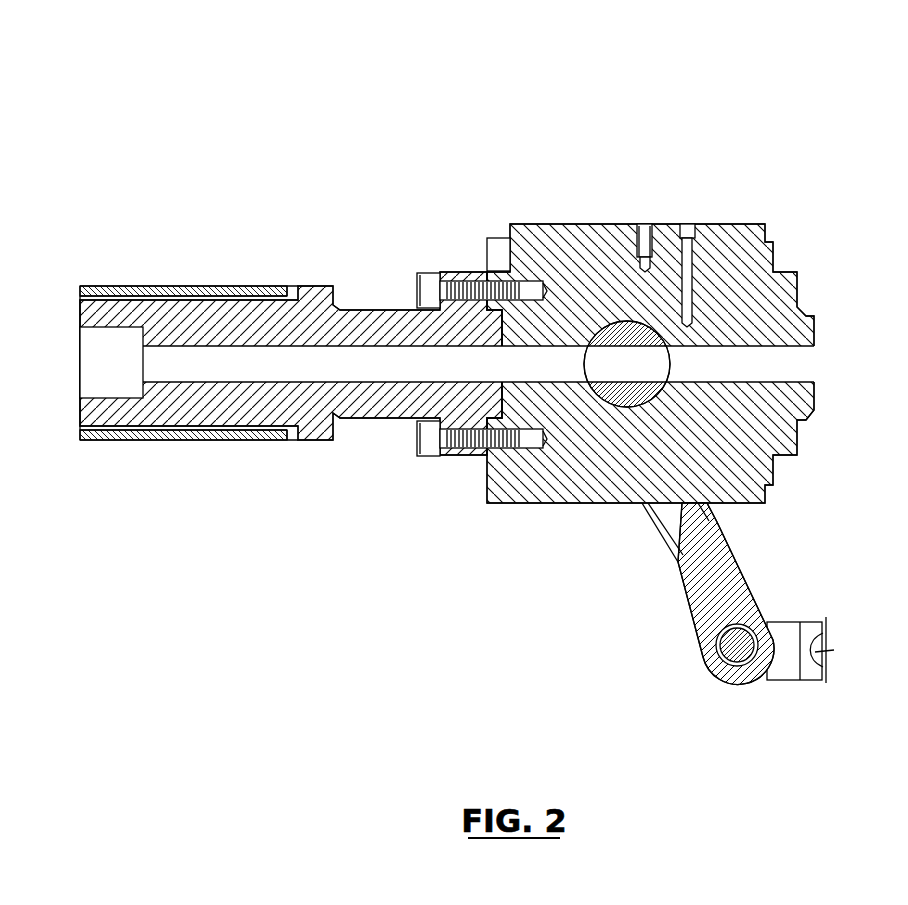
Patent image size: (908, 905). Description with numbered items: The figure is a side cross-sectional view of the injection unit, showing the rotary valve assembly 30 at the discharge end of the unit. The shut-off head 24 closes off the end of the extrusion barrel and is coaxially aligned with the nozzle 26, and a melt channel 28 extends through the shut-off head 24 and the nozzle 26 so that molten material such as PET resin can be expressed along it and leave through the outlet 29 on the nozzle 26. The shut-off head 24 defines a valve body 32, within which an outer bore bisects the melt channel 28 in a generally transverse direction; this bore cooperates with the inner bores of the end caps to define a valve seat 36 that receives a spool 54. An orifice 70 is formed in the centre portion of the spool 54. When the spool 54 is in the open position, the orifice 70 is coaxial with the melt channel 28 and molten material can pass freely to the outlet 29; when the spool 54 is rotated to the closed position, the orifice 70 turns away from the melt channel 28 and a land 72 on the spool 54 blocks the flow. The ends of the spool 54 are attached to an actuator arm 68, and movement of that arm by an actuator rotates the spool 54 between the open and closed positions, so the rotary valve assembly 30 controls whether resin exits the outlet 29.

The rotary valve assembly 30 is at (537, 108).
The shut-off head 24 is at (505, 527).
The valve body 32 is at (728, 236).
The melt channel 28 is at (312, 370).
The nozzle 26 is at (192, 287).
The outlet 29 is at (107, 365).
The land 72 is at (663, 342).
The orifice 70 is at (626, 350).
The valve seat 36 is at (648, 397).
The spool 54 is at (643, 395).
The actuator arm 68 is at (702, 645).